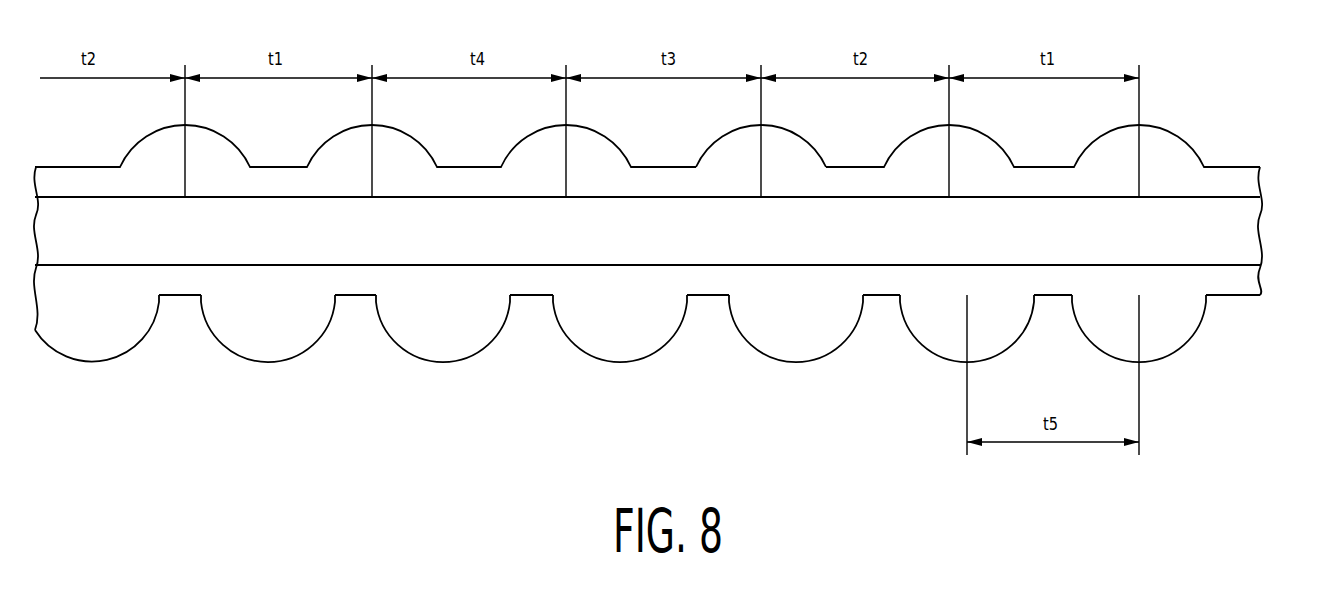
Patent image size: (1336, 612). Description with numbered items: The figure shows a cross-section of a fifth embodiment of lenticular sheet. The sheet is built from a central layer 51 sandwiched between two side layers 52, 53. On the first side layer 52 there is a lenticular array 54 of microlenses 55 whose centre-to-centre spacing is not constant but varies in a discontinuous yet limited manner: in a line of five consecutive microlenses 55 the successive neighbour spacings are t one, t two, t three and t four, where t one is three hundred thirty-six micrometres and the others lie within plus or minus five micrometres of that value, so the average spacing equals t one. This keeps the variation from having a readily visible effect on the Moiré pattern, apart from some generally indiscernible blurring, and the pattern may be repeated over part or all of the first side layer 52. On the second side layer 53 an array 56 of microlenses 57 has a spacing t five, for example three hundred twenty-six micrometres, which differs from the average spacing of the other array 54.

The central layer 51 is at (1235, 238).
The first side layer 52 is at (1235, 177).
The second side layer 53 is at (1240, 275).
The lenticular array 54 is at (1243, 166).
The microlens 55 is at (735, 128).
The array 56 is at (1240, 297).
The microlens 57 is at (762, 358).